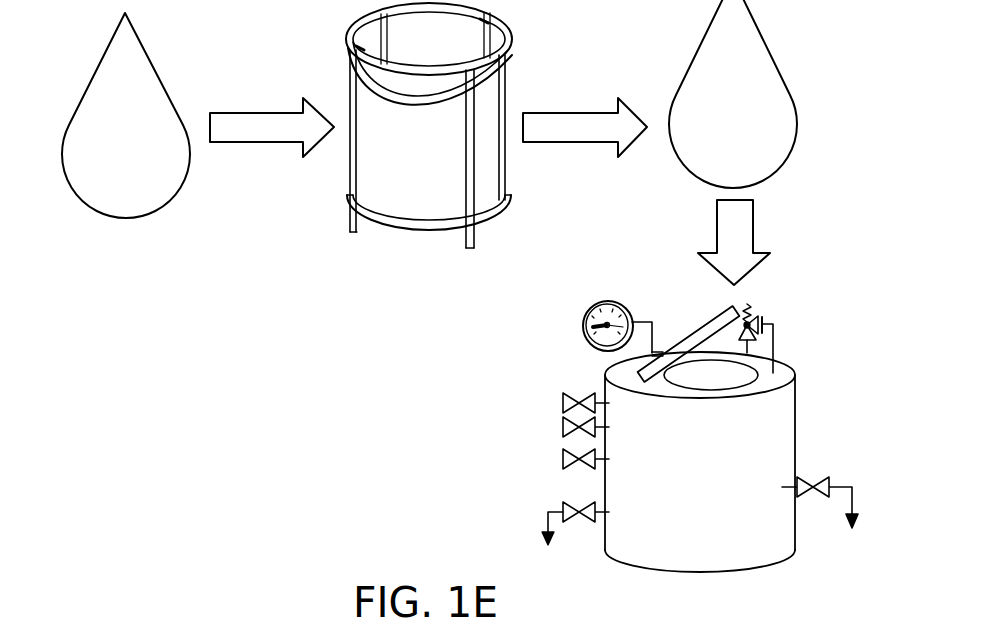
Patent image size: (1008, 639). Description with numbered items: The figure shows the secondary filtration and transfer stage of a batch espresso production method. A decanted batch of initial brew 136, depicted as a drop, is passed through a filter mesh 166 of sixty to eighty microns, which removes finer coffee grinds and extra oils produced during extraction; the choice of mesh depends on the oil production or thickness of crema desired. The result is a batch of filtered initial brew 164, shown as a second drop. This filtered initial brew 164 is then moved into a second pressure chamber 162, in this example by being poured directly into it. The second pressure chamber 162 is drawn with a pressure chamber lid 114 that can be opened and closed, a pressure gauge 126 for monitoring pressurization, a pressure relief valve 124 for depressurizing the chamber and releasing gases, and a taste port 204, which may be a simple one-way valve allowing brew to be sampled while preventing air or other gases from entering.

The initial brew 136 is at (105, 112).
The filter mesh 166 is at (406, 226).
The filtered initial brew 164 is at (711, 66).
The second pressure chamber 162 is at (678, 461).
The taste port 204 is at (535, 520).
The pressure gauge 126 is at (609, 301).
The pressure chamber lid 114 is at (703, 324).
The pressure relief valve 124 is at (764, 324).